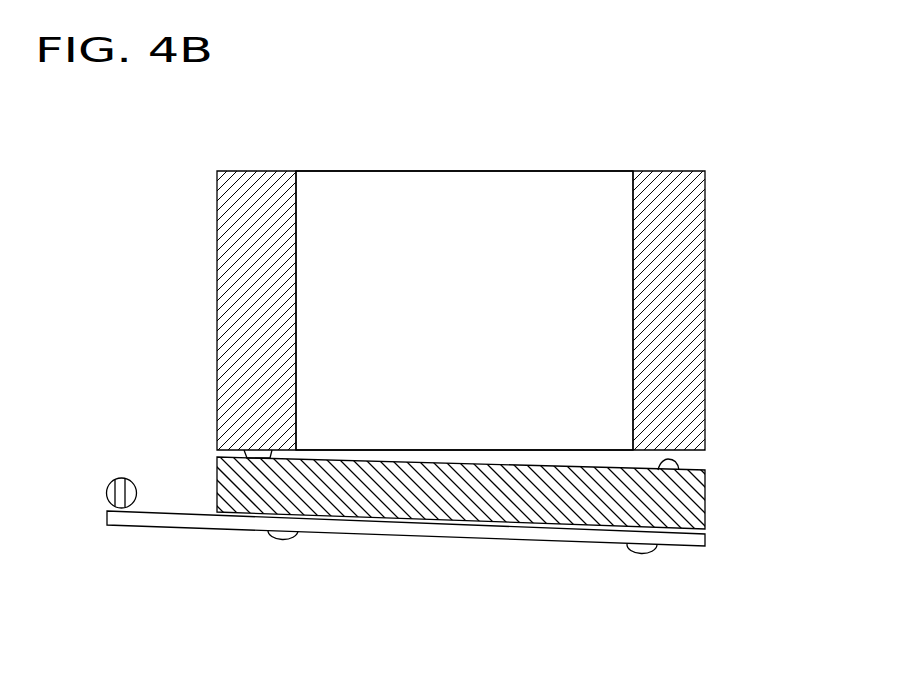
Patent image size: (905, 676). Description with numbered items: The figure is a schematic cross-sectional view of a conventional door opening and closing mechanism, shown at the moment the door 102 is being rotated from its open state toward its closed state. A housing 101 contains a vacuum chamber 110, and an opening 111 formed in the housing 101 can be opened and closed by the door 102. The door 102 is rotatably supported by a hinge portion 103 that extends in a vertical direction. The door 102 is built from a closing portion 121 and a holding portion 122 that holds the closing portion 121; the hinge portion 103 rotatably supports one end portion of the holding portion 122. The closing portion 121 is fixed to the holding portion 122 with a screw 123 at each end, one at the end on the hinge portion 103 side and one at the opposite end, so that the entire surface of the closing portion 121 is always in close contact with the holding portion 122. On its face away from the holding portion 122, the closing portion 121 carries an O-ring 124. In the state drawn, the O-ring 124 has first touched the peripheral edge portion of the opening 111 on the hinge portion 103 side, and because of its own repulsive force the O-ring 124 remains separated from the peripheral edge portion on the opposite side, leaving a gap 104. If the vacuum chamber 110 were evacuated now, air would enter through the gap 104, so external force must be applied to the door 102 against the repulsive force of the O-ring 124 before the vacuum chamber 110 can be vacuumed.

The housing 101 is at (705, 258).
The door 102 is at (705, 517).
The hinge portion 103 is at (108, 485).
The gap 104 is at (687, 458).
The vacuum chamber 110 is at (487, 244).
The opening 111 is at (633, 328).
The closing portion 121 is at (475, 465).
The holding portion 122 is at (450, 534).
The screw 123 is at (285, 539).
The O-ring 124 is at (247, 453).